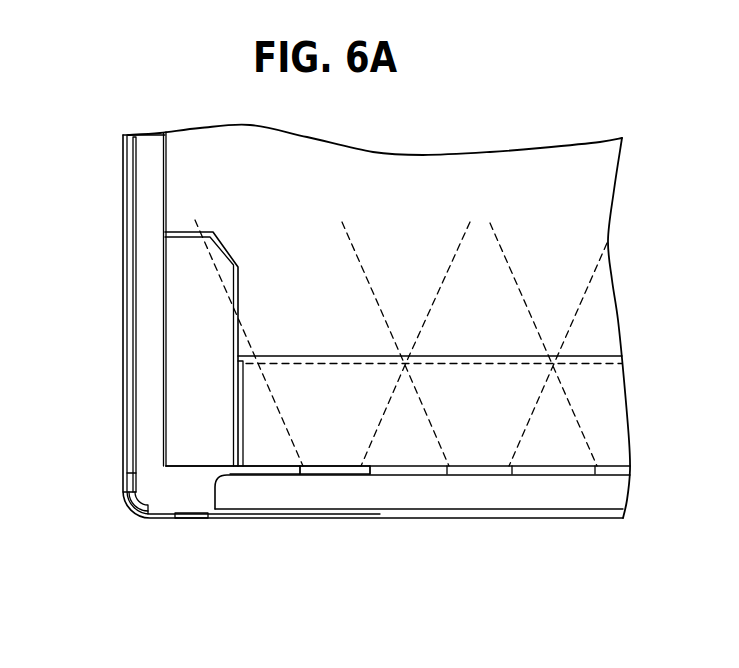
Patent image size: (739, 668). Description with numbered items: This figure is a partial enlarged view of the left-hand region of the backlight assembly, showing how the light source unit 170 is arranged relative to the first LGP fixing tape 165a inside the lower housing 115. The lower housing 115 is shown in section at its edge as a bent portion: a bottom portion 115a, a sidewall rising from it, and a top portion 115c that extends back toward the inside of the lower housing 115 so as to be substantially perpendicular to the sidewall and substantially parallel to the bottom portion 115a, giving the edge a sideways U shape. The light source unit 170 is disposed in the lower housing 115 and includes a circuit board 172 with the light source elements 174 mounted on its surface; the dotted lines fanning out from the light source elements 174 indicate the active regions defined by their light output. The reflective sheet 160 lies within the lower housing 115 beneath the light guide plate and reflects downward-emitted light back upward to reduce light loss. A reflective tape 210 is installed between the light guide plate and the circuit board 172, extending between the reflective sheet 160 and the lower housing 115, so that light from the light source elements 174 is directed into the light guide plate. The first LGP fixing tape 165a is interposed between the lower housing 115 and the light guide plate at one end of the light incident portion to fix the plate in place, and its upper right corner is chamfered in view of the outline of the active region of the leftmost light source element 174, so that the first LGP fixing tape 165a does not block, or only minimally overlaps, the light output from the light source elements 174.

The lower housing 115 is at (150, 418).
The bottom portion 115a is at (165, 480).
The top portion 115c is at (408, 490).
The reflective sheet 160 is at (180, 163).
The first LGP fixing tape 165a is at (183, 308).
The light source unit 170 is at (398, 552).
The circuit board 172 is at (275, 468).
The light source elements 174 is at (338, 468).
The reflective tape 210 is at (487, 440).